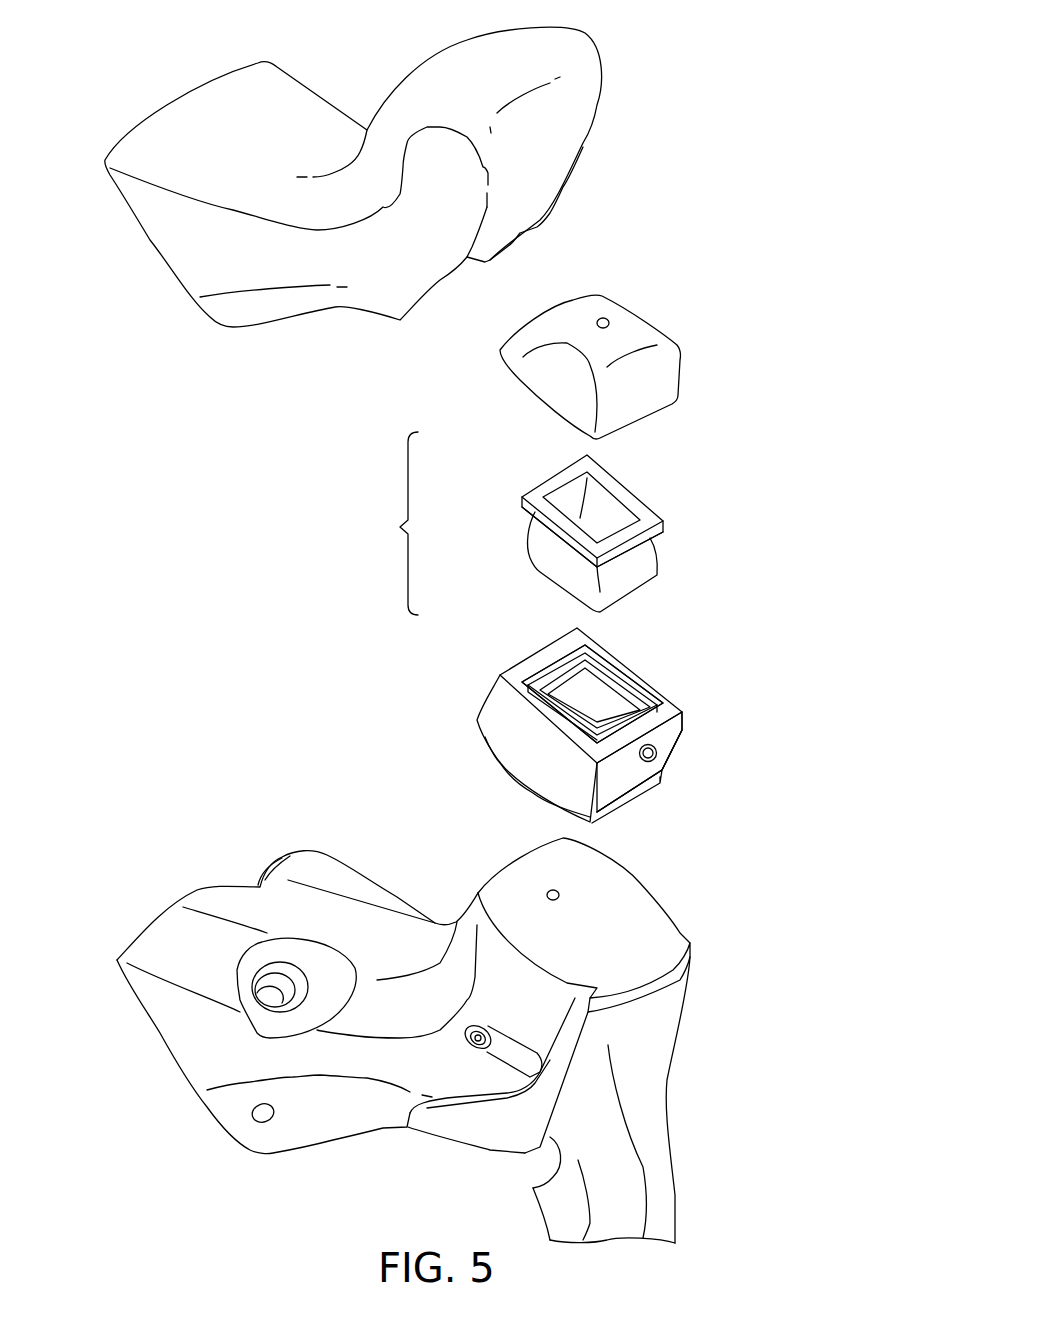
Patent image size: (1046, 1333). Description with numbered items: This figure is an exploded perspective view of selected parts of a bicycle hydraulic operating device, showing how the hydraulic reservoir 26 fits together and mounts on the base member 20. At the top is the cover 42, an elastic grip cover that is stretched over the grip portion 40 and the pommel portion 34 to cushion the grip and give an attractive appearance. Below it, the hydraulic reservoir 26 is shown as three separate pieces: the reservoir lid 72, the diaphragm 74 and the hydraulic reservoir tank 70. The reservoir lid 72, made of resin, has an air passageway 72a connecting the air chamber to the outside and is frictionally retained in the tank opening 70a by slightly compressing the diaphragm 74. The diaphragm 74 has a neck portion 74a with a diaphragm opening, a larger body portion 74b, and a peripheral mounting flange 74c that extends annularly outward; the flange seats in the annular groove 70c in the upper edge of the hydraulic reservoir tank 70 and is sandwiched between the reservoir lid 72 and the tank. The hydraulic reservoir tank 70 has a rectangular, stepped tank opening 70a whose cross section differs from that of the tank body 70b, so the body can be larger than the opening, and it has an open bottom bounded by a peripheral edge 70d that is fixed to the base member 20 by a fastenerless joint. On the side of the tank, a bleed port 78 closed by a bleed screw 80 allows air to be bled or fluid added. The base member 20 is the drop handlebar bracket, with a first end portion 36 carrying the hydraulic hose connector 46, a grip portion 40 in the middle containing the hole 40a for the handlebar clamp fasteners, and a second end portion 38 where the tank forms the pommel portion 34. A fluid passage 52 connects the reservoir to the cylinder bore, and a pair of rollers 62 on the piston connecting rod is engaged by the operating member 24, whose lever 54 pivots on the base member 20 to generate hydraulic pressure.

The base member 20 is at (346, 1006).
The operating member 24 is at (612, 1040).
The hydraulic reservoir 26 is at (394, 523).
The pommel portion 34 is at (667, 977).
The first end portion 36 is at (218, 900).
The second end portion 38 is at (543, 1183).
The grip portion 40 is at (321, 961).
The hole 40a is at (277, 998).
The cover 42 is at (563, 32).
The hydraulic hose connector 46 is at (270, 862).
The fluid passage 52 is at (553, 888).
The lever 54 is at (677, 1180).
The rollers 62 is at (490, 1030).
The hydraulic reservoir tank 70 is at (570, 715).
The tank opening 70a is at (607, 687).
The tank body 70b is at (618, 773).
The annular groove 70c is at (650, 697).
The peripheral edge 70d is at (650, 787).
The reservoir lid 72 is at (555, 374).
The air passageway 72a is at (608, 318).
The diaphragm 74 is at (577, 533).
The neck portion 74a is at (603, 500).
The body portion 74b is at (657, 557).
The peripheral mounting flange 74c is at (663, 523).
The bleed port 78 is at (658, 758).
The bleed screw 80 is at (657, 750).